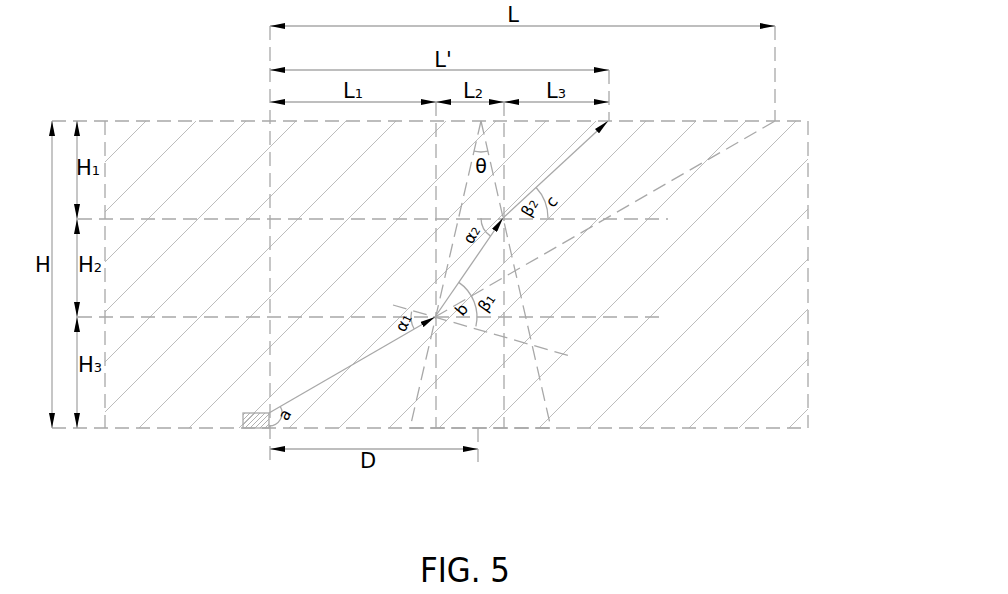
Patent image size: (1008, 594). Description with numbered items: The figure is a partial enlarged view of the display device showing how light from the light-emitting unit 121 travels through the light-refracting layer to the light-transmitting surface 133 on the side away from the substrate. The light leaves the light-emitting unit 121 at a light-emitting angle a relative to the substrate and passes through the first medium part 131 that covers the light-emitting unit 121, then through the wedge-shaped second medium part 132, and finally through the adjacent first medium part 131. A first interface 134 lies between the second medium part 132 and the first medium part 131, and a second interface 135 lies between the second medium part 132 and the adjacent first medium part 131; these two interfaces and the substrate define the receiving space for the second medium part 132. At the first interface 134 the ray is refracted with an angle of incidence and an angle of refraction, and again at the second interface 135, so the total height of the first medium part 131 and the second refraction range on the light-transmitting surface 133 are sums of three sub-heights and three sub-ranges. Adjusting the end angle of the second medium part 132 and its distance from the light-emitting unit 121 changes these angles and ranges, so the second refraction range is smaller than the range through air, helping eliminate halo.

The light-emitting unit 121 is at (260, 428).
The first medium part 131 is at (128, 428).
The second medium part 132 is at (501, 428).
The light-transmitting surface 133 is at (190, 118).
The first interface 134 is at (417, 416).
The second interface 135 is at (545, 414).
The light-emitting angle a is at (808, 178).